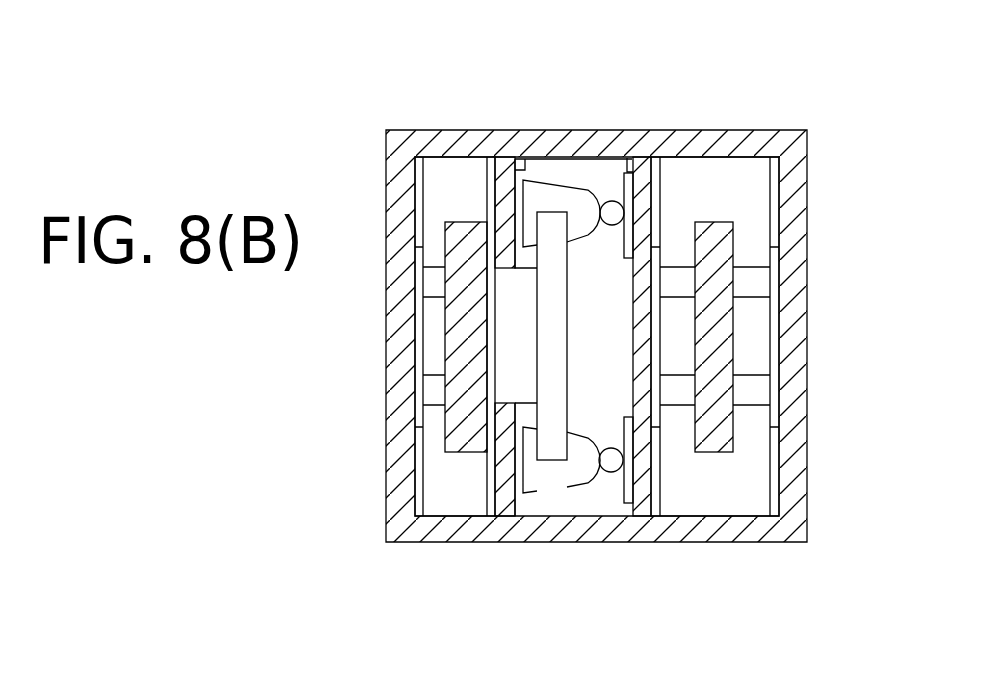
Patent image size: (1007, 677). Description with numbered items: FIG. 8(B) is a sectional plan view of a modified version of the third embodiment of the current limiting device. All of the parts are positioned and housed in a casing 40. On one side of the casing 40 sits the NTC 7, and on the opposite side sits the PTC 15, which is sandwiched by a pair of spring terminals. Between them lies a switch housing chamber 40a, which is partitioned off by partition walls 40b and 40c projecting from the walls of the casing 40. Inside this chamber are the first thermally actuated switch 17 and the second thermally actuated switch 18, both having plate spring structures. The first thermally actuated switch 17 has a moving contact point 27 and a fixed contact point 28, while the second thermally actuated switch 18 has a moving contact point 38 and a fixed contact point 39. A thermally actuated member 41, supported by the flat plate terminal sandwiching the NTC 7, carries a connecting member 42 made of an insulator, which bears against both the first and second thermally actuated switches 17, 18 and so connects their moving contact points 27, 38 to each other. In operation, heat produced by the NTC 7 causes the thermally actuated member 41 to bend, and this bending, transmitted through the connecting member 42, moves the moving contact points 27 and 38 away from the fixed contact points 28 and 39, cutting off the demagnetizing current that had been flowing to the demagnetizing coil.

The NTC 7 is at (452, 330).
The PTC 15 is at (723, 333).
The first thermally actuated switch 17 is at (658, 602).
The second thermally actuated switch 18 is at (627, 48).
The moving contact point 27 is at (598, 470).
The fixed contact point 28 is at (610, 486).
The moving contact point 38 is at (600, 199).
The fixed contact point 39 is at (620, 186).
The casing 40 is at (808, 425).
The switch housing chamber 40a is at (600, 388).
The partition wall 40b is at (525, 158).
The partition wall 40c is at (630, 165).
The thermally actuated member 41 is at (510, 354).
The connecting member 42 is at (568, 308).